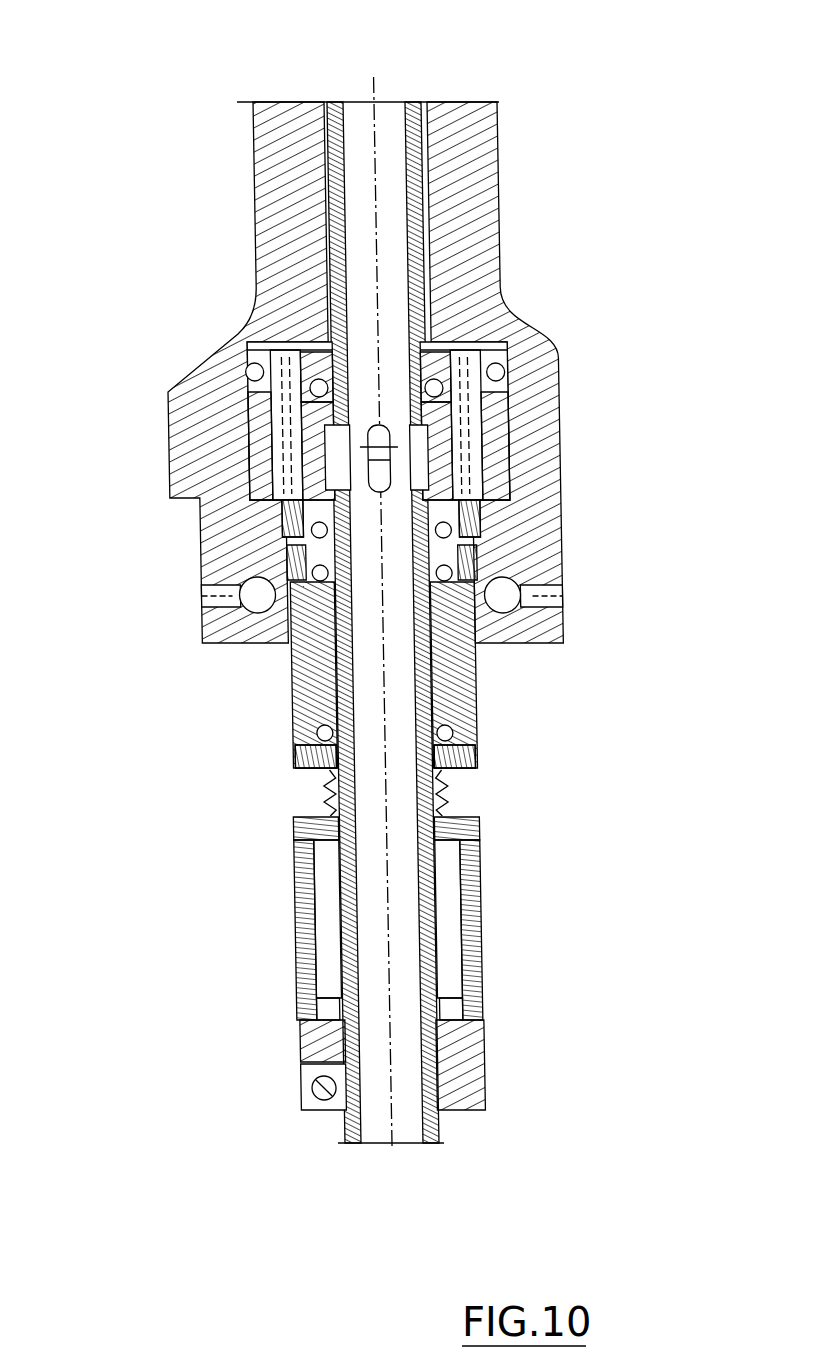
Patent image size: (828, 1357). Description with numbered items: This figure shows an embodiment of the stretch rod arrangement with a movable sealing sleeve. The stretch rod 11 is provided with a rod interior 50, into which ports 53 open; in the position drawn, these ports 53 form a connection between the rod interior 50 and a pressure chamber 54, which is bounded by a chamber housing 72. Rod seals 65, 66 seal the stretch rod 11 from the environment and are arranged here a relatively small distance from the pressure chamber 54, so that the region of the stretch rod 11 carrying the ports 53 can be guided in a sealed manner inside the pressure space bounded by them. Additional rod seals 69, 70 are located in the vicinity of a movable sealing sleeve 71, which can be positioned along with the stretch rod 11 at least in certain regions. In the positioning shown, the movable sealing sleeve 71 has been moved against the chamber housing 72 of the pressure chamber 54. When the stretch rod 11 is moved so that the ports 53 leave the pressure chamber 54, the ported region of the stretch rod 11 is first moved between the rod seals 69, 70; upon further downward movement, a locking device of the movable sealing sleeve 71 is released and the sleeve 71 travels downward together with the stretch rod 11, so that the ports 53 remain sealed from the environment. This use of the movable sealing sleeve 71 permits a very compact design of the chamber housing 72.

The stretch rod 11 is at (413, 103).
The rod interior 50 is at (360, 136).
The ports 53 is at (335, 450).
The pressure chamber 54 is at (430, 453).
The rod seal 65 is at (470, 352).
The rod seal 66 is at (480, 545).
The rod seal 69 is at (540, 597).
The rod seal 70 is at (452, 737).
The movable sealing sleeve 71 is at (292, 693).
The chamber housing 72 is at (540, 358).